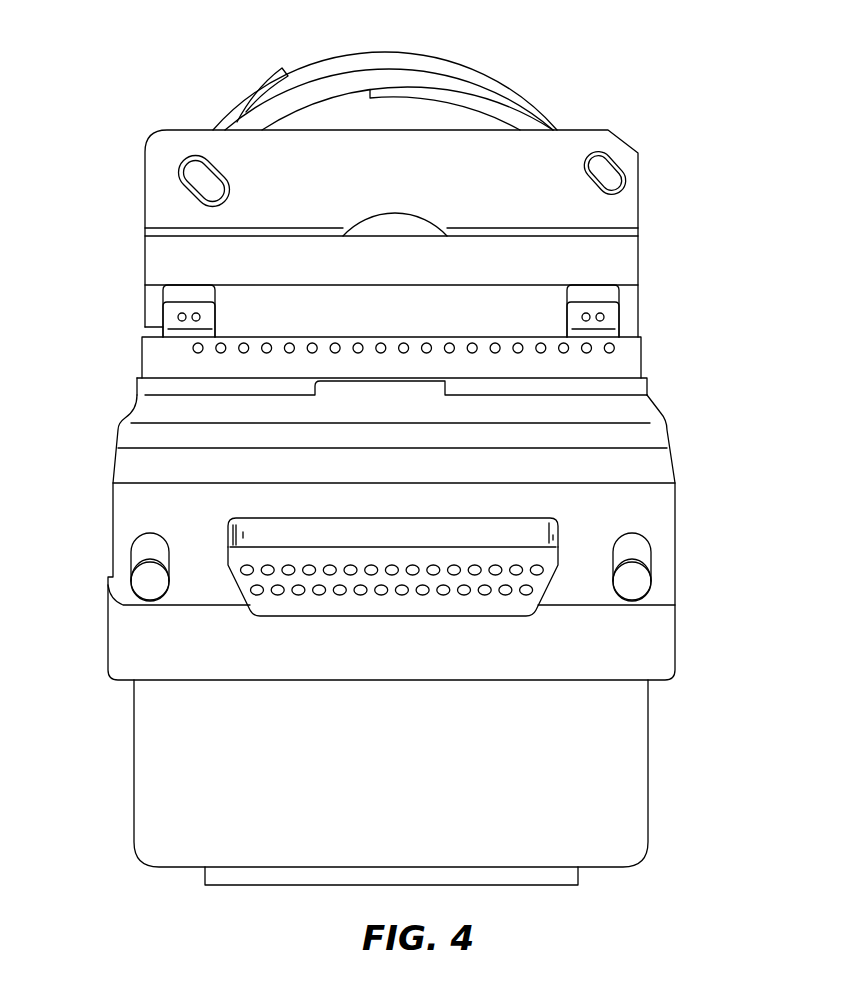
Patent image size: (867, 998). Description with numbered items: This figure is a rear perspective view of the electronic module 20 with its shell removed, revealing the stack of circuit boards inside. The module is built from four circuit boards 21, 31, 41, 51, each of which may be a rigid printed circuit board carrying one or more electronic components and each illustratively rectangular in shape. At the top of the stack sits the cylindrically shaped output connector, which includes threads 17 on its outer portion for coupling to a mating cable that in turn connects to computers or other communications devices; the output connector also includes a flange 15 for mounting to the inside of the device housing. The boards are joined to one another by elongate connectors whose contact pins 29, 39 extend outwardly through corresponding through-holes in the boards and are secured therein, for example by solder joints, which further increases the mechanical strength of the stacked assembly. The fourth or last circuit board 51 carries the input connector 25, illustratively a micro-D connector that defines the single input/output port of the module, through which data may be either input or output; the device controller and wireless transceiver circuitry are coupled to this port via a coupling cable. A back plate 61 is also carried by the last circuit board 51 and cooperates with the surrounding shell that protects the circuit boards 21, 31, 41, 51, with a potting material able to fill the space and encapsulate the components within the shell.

The electronic module 20 is at (170, 106).
The threads 17 is at (463, 80).
The flange 15 is at (145, 152).
The circuit board 21 is at (165, 261).
The contact pins 29 is at (194, 314).
The circuit board 31 is at (172, 316).
The circuit board 41 is at (158, 357).
The contact pins 39 is at (614, 348).
The circuit board 51 is at (145, 387).
The input connector 25 is at (285, 527).
The back plate 61 is at (170, 748).